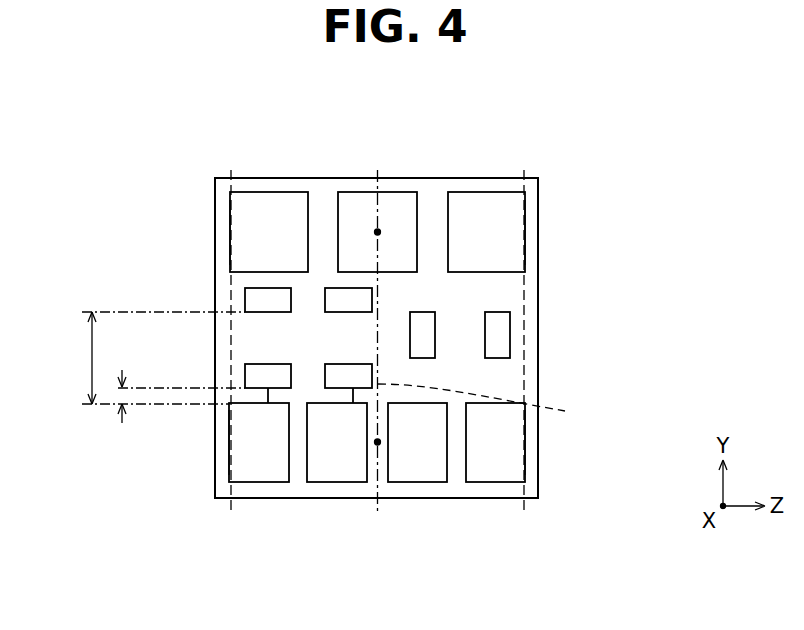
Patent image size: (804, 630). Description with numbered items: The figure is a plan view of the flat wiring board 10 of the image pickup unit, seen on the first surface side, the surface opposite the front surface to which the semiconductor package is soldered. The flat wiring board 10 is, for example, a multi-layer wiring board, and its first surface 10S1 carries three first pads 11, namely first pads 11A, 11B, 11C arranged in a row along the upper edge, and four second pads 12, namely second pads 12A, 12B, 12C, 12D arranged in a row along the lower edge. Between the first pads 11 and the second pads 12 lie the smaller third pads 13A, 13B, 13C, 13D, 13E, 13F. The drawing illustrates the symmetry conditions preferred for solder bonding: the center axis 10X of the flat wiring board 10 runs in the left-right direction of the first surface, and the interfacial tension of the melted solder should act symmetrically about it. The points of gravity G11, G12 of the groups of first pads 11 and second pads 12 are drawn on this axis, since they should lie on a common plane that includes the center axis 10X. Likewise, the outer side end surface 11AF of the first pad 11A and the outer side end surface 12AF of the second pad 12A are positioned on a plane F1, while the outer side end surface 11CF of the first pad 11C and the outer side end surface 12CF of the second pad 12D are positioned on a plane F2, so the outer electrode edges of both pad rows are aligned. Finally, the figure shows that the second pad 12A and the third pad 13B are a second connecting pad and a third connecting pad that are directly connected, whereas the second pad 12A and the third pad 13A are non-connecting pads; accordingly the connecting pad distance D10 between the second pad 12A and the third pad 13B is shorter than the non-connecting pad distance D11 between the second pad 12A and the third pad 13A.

The flat wiring board 10 is at (648, 173).
The first pads 11 is at (230, 130).
The first pad 11A is at (268, 192).
The first pad 11B is at (408, 192).
The first pad 11C is at (485, 192).
The outer side end surface of the first pad 11A 11AF is at (230, 247).
The outer side end surface of the first pad 11C 11CF is at (525, 209).
The point of gravity of the first pads G11 is at (377, 232).
The first side surface 10S1 is at (539, 277).
The third pad 13A is at (245, 303).
The third pad 13B is at (245, 378).
The third pad 13C is at (325, 303).
The third pad 13D is at (325, 373).
The third pad 13E is at (415, 312).
The third pad 13F is at (497, 358).
The non-connecting pad distance D11 is at (140, 358).
The connecting pad distance D10 is at (171, 383).
The center axis of the flat wiring board 10X is at (515, 403).
The second pads 12 is at (253, 542).
The second pad 12A is at (268, 482).
The second pad 12B is at (343, 482).
The second pad 12C is at (417, 482).
The second pad 12D is at (484, 482).
The outer side end surface of the second pad 12A 12AF is at (229, 440).
The outer side end surface of the second pad 12D 12CF is at (525, 463).
The point of gravity of the second pads G12 is at (377, 442).
The plane F1 is at (225, 359).
The plane F2 is at (538, 359).